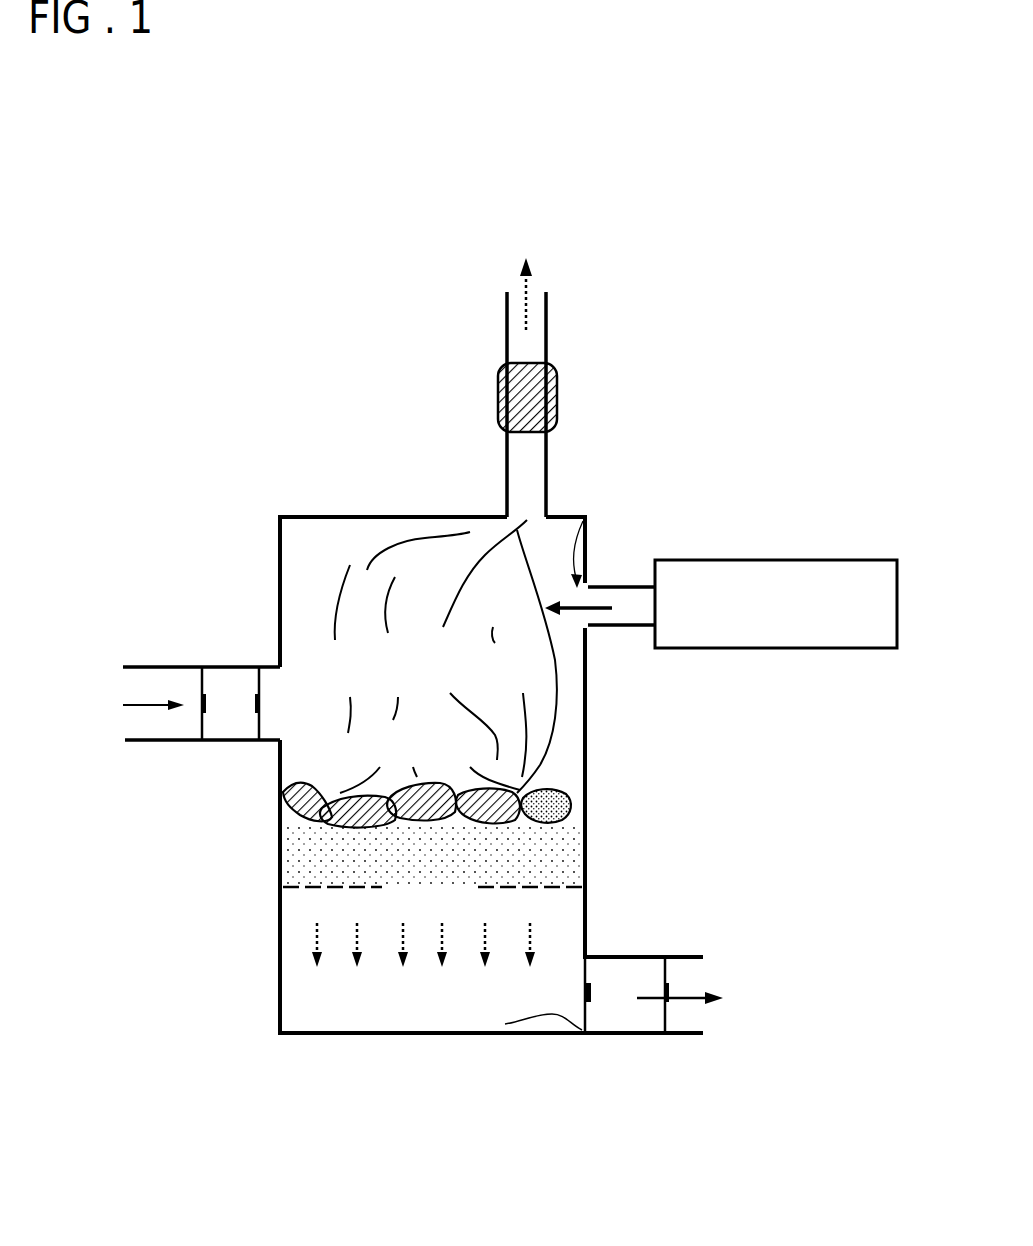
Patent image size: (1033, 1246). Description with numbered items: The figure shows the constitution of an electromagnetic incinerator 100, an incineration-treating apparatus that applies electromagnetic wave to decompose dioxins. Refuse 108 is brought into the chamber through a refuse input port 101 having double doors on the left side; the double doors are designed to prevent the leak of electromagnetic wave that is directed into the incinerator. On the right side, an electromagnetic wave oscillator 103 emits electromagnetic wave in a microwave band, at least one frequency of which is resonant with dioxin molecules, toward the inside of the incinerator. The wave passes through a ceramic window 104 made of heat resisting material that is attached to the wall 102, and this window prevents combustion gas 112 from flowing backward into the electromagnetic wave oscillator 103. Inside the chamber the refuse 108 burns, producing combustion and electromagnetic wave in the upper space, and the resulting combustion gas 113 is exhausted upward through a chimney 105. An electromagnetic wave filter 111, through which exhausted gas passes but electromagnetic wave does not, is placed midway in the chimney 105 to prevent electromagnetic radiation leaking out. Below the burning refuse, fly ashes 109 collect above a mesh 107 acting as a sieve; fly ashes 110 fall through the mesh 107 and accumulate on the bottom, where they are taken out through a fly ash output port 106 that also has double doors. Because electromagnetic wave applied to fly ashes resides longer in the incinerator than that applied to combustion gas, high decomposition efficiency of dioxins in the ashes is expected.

The electromagnetic incinerator 100 is at (96, 342).
The refuse input port having double doors 101 is at (148, 653).
The wall 102 is at (587, 708).
The electromagnetic wave oscillator 103 is at (683, 560).
The ceramic window 104 is at (585, 518).
The chimney 105 is at (507, 480).
The fly ash output port 106 is at (621, 1030).
The mesh 107 is at (586, 886).
The refuse 108 is at (427, 779).
The fly ashes 109 is at (471, 865).
The fly ashes 110 is at (290, 1032).
The electromagnetic wave filter 111 is at (558, 375).
The combustion gas 112 is at (424, 656).
The combustion gas 113 is at (526, 272).